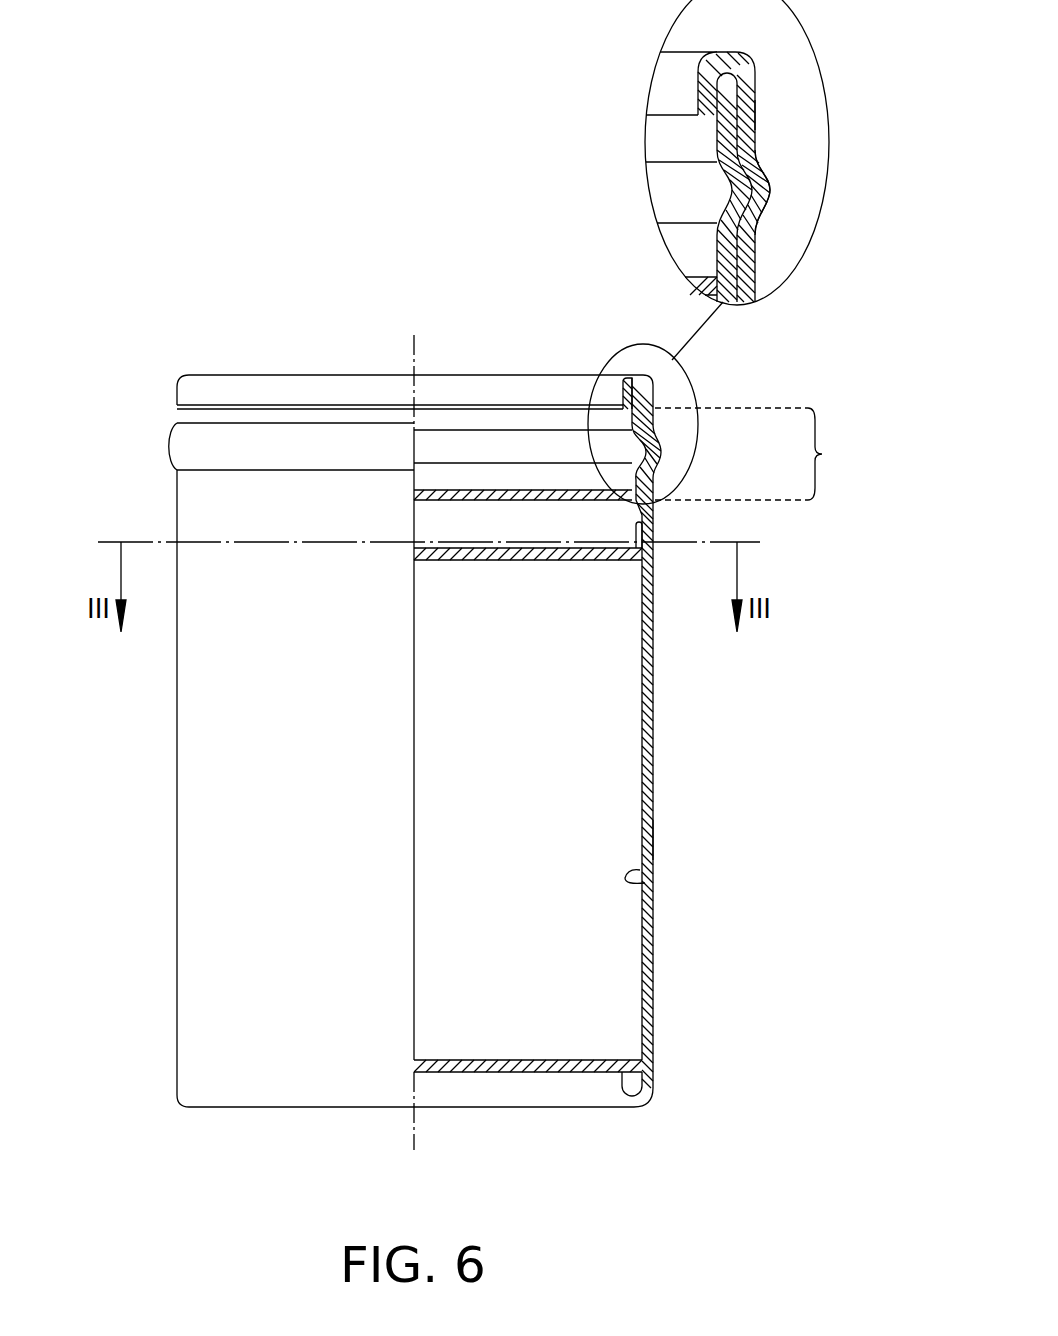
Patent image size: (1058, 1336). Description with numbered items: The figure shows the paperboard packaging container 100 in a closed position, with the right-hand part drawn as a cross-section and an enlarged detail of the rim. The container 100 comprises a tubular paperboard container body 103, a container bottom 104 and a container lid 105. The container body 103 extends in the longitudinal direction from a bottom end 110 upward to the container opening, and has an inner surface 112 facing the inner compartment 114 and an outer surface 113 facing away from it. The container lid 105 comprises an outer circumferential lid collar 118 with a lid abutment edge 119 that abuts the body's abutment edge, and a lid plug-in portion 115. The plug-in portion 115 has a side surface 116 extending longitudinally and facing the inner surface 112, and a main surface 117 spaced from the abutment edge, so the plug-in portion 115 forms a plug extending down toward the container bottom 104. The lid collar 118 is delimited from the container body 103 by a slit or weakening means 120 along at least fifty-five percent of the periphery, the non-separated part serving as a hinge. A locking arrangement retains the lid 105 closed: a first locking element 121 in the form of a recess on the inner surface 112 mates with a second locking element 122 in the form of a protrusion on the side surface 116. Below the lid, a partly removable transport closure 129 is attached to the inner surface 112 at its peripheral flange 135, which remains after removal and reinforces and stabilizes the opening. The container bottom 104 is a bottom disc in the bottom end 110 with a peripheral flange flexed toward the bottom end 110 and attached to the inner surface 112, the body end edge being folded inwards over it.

The paperboard packaging container 100 is at (298, 248).
The container body 103 is at (163, 418).
The container bottom 104 is at (525, 1060).
The container lid 105 is at (230, 369).
The bottom end 110 is at (372, 1108).
The inner surface 112 is at (645, 883).
The outer surface 113 is at (650, 840).
The inner compartment 114 is at (537, 802).
The lid plug-in portion 115 is at (765, 454).
The side surface 116 is at (727, 263).
The main surface 117 is at (490, 490).
The lid collar 118 is at (757, 70).
The lid abutment edge 119 is at (755, 130).
The weakening means 120 is at (383, 407).
The first locking element 121 is at (733, 193).
The second locking element 122 is at (772, 195).
The transport closure 129 is at (525, 562).
The transport closure peripheral flange 135 is at (638, 530).